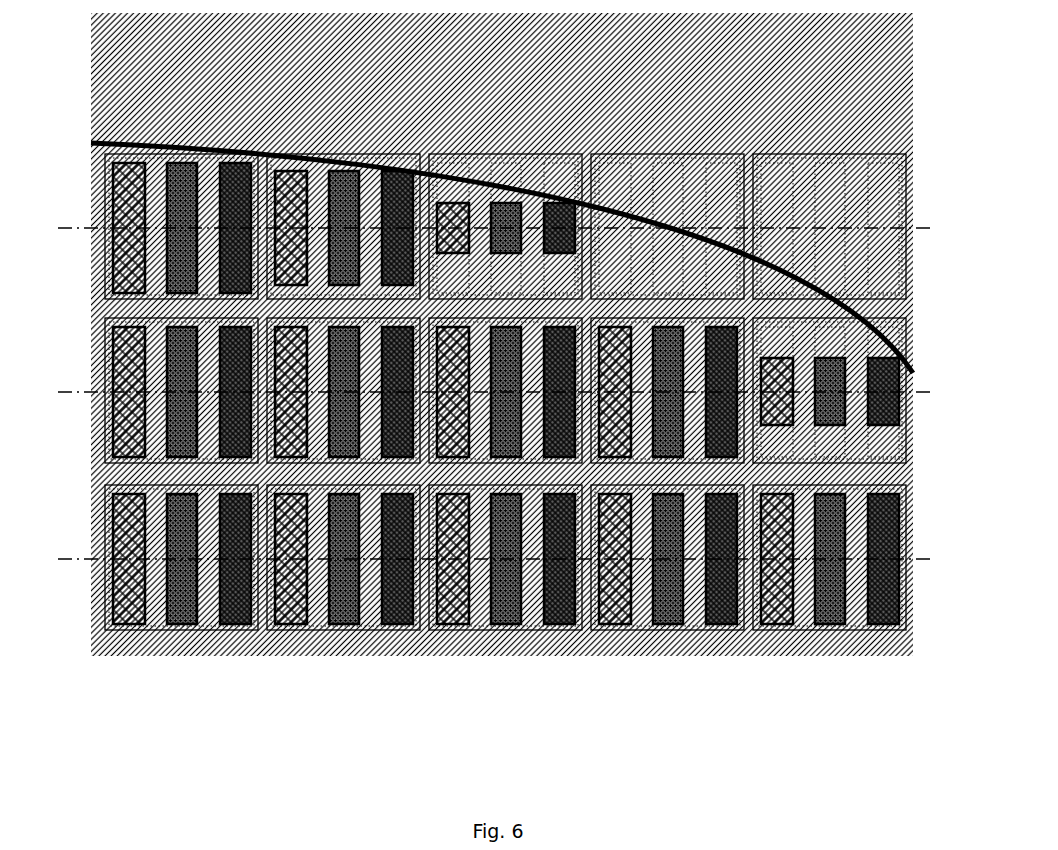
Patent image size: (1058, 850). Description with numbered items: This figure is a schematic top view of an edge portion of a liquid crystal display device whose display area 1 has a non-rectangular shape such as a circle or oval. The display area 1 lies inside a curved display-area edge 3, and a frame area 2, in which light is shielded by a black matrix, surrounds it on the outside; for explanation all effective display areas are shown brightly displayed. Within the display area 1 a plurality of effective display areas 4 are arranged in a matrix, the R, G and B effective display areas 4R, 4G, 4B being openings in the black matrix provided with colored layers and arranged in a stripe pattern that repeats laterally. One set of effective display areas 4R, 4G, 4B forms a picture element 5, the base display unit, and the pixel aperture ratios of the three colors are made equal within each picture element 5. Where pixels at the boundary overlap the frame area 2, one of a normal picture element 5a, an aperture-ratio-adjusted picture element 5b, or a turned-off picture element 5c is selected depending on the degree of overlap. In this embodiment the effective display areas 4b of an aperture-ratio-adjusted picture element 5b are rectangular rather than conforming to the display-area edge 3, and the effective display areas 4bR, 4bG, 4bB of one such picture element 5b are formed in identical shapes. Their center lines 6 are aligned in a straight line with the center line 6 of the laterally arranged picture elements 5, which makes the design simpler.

The display area 1 is at (528, 394).
The frame area 2 is at (890, 97).
The display-area edge 3 is at (893, 300).
The effective display area 4 is at (184, 621).
The R effective display area 4R is at (113, 607).
The G effective display area 4G is at (178, 607).
The B effective display area 4B is at (240, 599).
The aperture-ratio-adjusted effective display area 4b is at (339, 165).
The R aperture-ratio-adjusted effective display area 4bR is at (278, 162).
The G aperture-ratio-adjusted effective display area 4bG is at (330, 158).
The B aperture-ratio-adjusted effective display area 4bB is at (390, 193).
The picture element 5 is at (470, 622).
The normal picture element 5a is at (143, 150).
The aperture-ratio-adjusted picture element 5b is at (417, 170).
The turned-off picture element 5c is at (738, 243).
The center line 6 is at (55, 218).